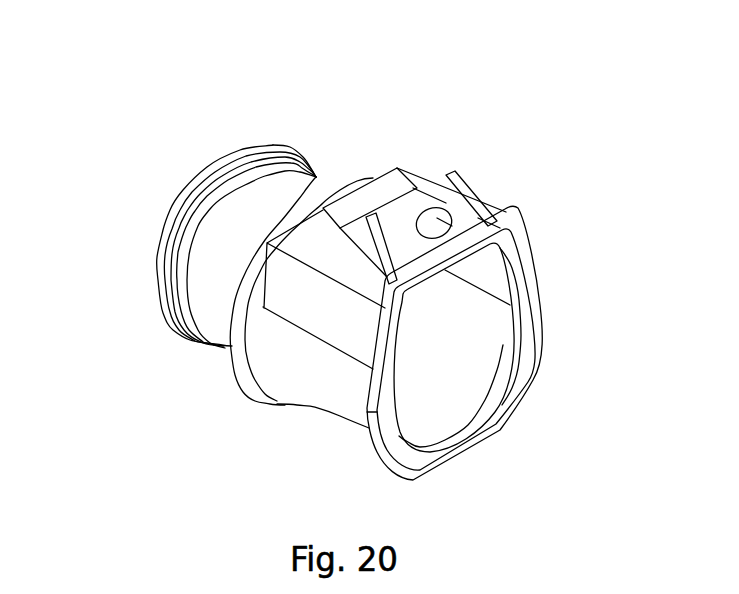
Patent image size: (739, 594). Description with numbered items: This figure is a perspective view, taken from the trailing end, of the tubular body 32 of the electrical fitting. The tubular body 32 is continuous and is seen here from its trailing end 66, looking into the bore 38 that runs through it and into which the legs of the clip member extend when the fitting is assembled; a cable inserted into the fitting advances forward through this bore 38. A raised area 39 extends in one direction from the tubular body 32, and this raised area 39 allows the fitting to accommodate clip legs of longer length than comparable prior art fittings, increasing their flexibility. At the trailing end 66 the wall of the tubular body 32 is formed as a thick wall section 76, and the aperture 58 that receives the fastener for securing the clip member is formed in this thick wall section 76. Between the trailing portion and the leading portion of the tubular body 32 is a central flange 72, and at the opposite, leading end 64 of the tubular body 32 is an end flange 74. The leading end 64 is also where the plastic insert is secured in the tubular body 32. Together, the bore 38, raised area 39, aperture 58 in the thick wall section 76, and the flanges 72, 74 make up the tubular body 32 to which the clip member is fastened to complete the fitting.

The tubular body 32 is at (128, 152).
The bore 38 is at (445, 350).
The raised area 39 is at (394, 185).
The aperture 58 is at (482, 197).
The leading end 64 is at (240, 152).
The trailing end 66 is at (538, 266).
The central flange 72 is at (237, 366).
The end flange 74 is at (168, 309).
The thick wall section 76 is at (442, 200).